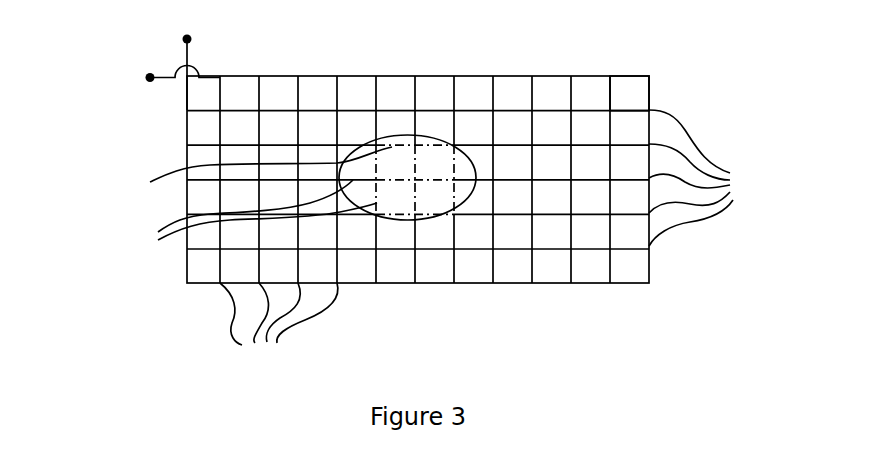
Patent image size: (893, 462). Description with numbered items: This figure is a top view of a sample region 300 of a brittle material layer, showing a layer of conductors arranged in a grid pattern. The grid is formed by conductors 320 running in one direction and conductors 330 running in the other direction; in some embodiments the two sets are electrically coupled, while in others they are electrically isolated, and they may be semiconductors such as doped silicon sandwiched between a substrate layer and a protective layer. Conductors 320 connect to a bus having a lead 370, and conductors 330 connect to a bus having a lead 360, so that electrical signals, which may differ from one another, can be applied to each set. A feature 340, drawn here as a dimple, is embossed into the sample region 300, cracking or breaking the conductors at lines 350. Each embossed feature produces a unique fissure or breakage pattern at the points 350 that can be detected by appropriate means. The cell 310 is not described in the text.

The sample region 300 is at (418, 142).
The grid cell 310 is at (636, 92).
The conductors 320 is at (713, 178).
The conductors 330 is at (279, 327).
The feature 340 is at (250, 172).
The lines / points 350 is at (246, 216).
The lead 360 is at (150, 78).
The lead 370 is at (187, 39).